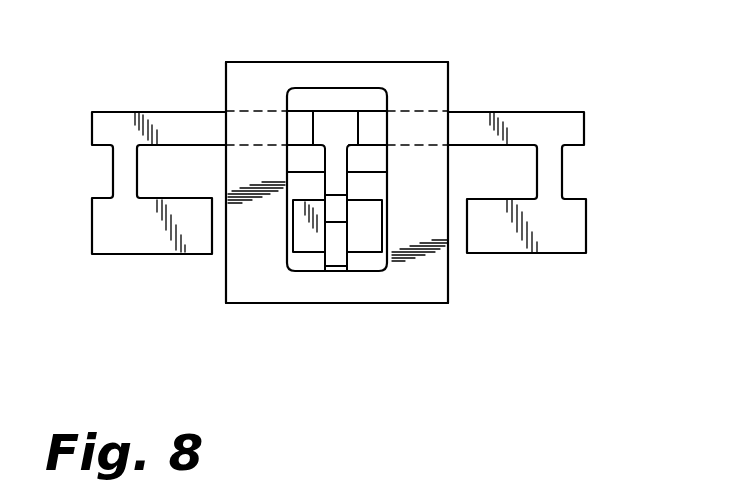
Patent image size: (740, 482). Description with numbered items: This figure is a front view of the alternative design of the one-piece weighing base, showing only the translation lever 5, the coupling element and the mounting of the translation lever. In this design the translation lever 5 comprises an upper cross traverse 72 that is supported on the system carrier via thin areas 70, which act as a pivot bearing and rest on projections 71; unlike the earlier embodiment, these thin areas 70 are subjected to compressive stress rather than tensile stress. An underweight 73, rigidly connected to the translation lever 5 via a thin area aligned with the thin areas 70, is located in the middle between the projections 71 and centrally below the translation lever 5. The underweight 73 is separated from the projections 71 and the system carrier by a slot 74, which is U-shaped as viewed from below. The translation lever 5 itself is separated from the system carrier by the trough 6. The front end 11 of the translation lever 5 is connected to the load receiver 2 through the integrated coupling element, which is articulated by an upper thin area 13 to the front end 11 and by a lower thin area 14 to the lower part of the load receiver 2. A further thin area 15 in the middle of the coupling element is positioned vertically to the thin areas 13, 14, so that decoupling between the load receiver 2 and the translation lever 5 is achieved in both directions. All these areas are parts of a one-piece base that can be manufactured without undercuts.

The load receiver 2 is at (407, 78).
The trough 6 is at (302, 155).
The front end of translation lever 11 is at (346, 77).
The translation lever 5 is at (337, 123).
The upper thin area 13 is at (333, 161).
The lower thin area 14 is at (338, 242).
The further thin area 15 is at (338, 212).
The underweight 73 is at (313, 242).
The upper cross traverse 72 is at (130, 128).
The thin areas 70 is at (125, 170).
The projections 71 is at (117, 228).
The slot 74 is at (223, 240).